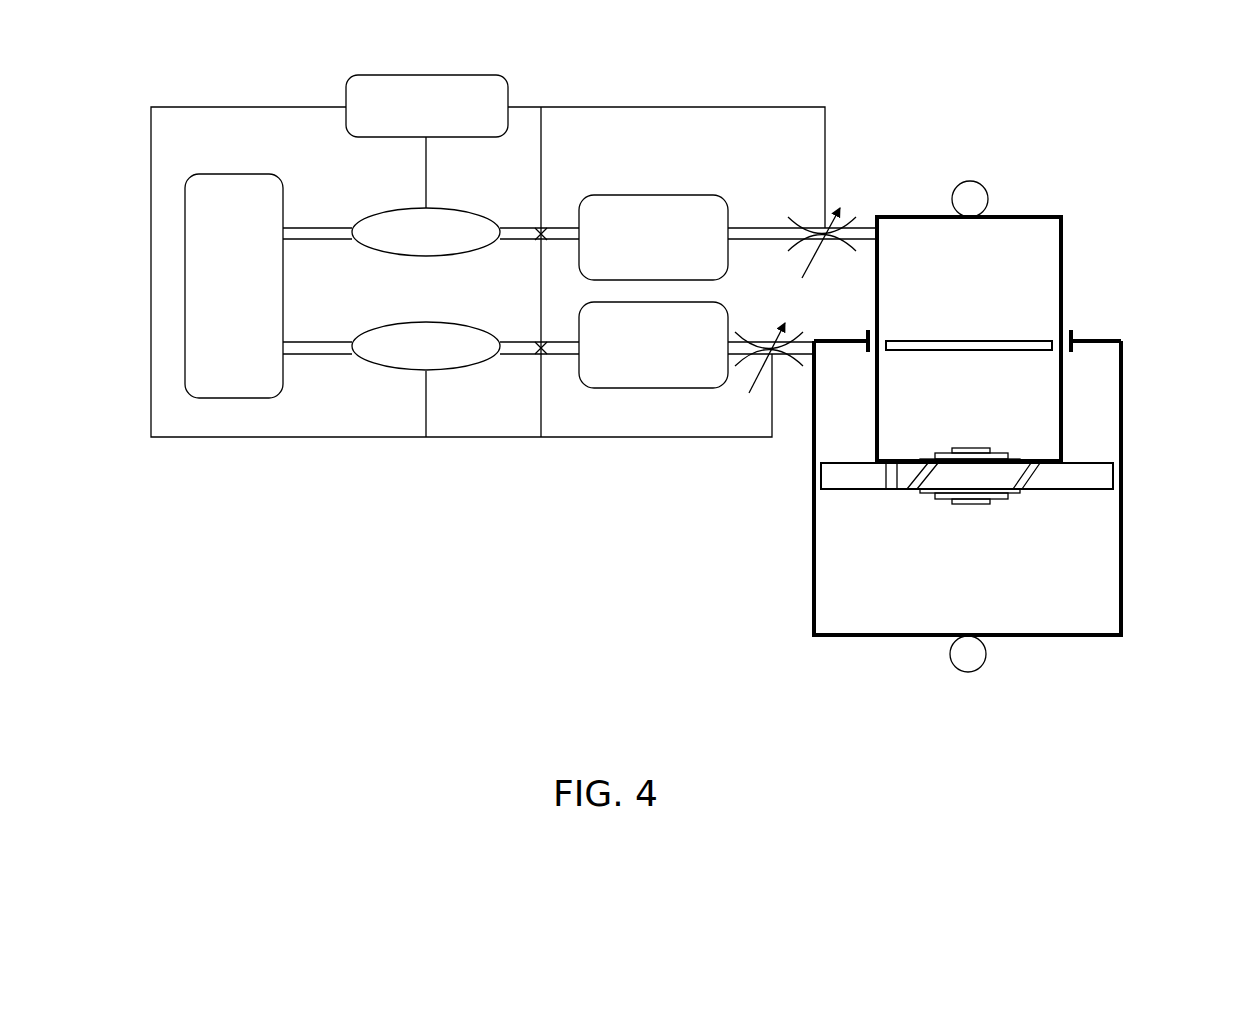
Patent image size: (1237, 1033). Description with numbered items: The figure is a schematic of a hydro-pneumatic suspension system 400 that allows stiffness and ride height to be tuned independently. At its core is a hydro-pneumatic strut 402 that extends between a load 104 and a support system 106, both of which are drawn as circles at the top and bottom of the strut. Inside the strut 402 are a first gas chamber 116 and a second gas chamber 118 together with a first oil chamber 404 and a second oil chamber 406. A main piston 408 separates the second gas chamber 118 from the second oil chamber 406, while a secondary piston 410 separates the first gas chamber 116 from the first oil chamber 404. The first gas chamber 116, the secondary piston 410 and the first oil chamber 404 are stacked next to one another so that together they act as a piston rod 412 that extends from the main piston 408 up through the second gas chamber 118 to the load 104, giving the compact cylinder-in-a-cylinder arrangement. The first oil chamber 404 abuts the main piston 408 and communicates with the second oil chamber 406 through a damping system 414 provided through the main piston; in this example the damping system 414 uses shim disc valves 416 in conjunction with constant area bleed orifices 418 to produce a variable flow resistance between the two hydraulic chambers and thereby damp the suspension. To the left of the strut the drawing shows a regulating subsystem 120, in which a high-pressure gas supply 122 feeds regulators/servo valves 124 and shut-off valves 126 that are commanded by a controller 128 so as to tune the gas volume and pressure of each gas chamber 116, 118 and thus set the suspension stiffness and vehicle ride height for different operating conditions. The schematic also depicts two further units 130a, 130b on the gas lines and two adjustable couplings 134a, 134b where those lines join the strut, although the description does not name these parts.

The load 104 is at (975, 181).
The support system 106 is at (973, 660).
The first gas chamber 116 is at (1023, 272).
The second gas chamber 118 is at (1097, 400).
The regulating subsystem 120 is at (247, 498).
The high-pressure gas supply 122 is at (223, 174).
The regulators/servo valves 124 is at (405, 340).
The shut-off valves 126 is at (541, 347).
The controller 128 is at (422, 74).
The first motor-generator 130a is at (640, 195).
The second motor-generator 130b is at (662, 388).
The first variable coupling 134a is at (822, 233).
The second variable coupling 134b is at (768, 347).
The hydro-pneumatic suspension system 400 is at (502, 582).
The hydro-pneumatic strut 402 is at (812, 527).
The first oil chamber 404 is at (993, 407).
The second oil chamber 406 is at (998, 591).
The main piston 408 is at (1090, 474).
The secondary piston 410 is at (978, 338).
The piston rod 412 is at (1035, 215).
The damping system 414 is at (1005, 533).
The shim disc valves 416 is at (943, 497).
The constant area bleed orifices 418 is at (892, 480).